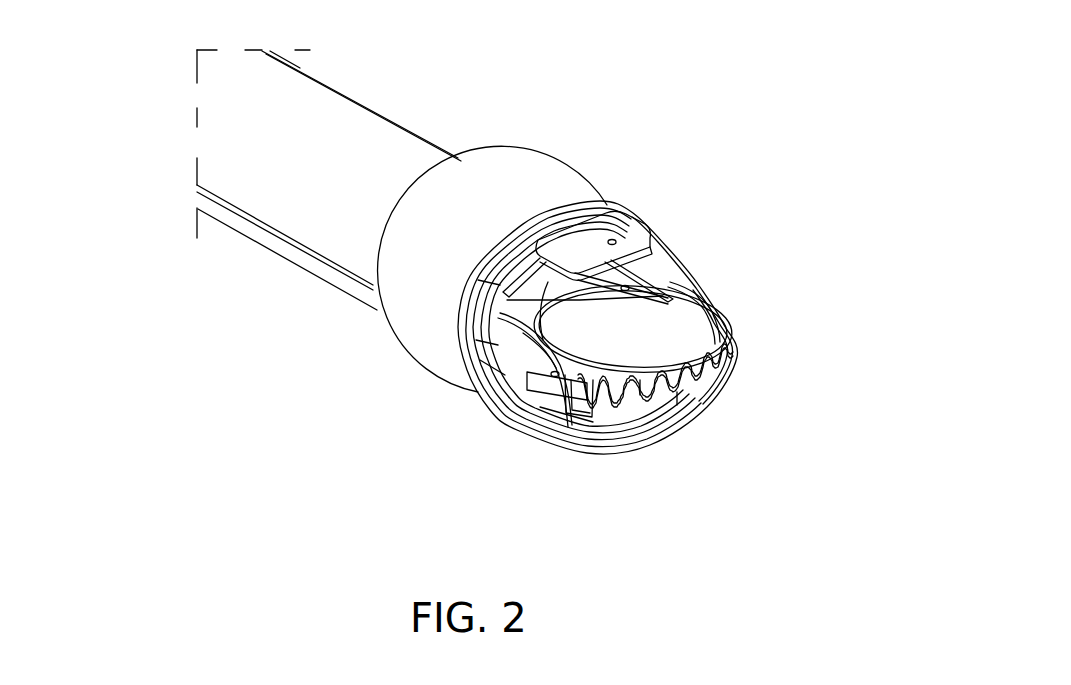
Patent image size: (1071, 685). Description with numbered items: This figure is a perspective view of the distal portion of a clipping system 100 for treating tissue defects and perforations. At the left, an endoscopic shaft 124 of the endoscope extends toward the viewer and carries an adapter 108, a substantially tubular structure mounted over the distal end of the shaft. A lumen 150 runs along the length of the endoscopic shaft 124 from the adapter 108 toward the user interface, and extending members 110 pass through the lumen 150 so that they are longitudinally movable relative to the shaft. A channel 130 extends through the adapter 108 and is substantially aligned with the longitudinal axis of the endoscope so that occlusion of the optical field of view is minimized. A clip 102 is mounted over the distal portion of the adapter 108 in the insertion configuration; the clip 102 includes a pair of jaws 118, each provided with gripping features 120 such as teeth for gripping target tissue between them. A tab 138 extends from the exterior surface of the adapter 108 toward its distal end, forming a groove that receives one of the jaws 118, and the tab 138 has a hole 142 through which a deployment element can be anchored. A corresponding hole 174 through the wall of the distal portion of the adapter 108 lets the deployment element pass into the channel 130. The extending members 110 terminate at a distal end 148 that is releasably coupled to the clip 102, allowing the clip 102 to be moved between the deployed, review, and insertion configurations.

The clipping system 100 is at (238, 259).
The clip 102 is at (730, 382).
The adapter 108 is at (542, 178).
The extending members 110 is at (695, 277).
The jaws 118 is at (640, 380).
The gripping features 120 is at (703, 373).
The endoscopic shaft 124 is at (323, 157).
The channel 130 is at (672, 325).
The tab 138 is at (628, 222).
The hole 142 is at (614, 238).
The distal end 148 is at (713, 282).
The lumen 150 is at (307, 74).
The corresponding hole 174 is at (626, 292).